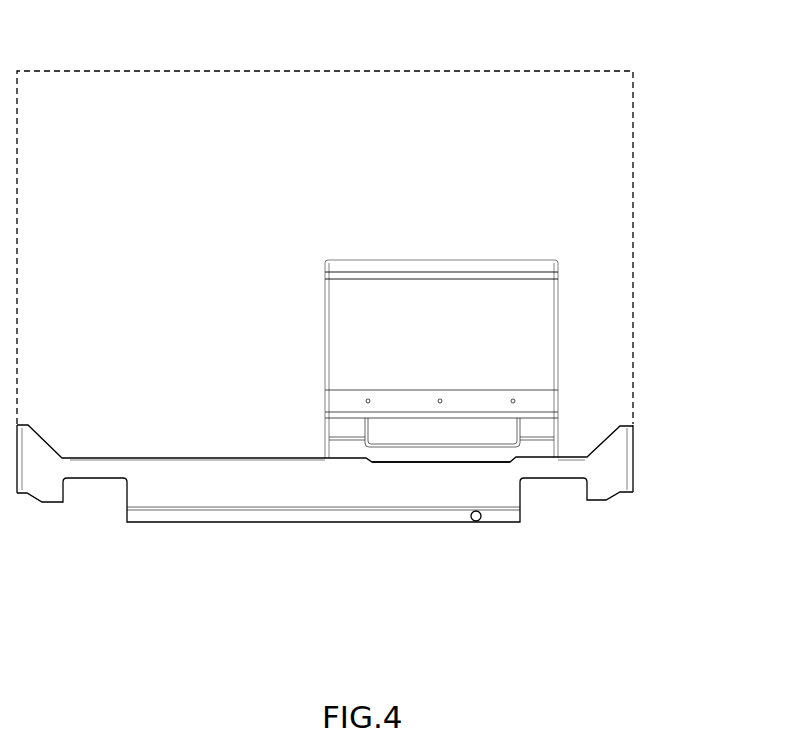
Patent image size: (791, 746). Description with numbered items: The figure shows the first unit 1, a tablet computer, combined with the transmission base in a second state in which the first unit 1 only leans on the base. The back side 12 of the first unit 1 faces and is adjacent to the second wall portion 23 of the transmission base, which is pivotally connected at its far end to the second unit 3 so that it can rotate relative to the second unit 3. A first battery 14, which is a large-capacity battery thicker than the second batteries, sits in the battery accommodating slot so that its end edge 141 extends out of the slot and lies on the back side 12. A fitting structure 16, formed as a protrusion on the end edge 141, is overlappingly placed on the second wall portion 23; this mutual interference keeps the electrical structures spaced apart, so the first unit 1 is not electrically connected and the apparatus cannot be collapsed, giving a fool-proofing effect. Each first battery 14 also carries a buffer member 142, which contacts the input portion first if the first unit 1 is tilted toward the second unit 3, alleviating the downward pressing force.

The first unit 1 is at (133, 71).
The back side 12 is at (497, 107).
The first battery 14 is at (528, 341).
The end edge 141 is at (538, 429).
The buffer member 142 is at (538, 401).
The fitting structure 16 is at (492, 463).
The second wall portion 23 is at (450, 493).
The second unit 3 is at (605, 485).